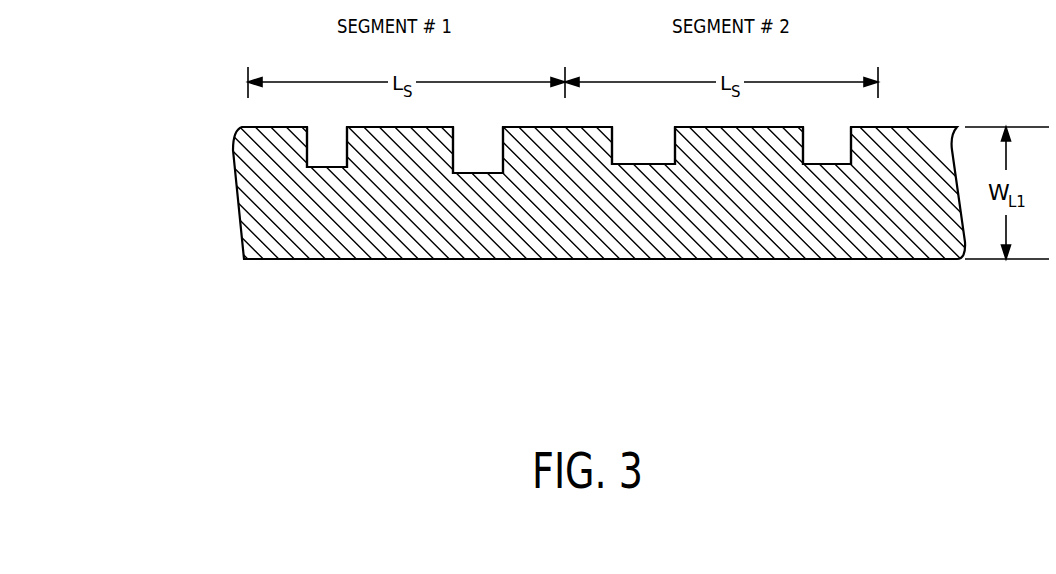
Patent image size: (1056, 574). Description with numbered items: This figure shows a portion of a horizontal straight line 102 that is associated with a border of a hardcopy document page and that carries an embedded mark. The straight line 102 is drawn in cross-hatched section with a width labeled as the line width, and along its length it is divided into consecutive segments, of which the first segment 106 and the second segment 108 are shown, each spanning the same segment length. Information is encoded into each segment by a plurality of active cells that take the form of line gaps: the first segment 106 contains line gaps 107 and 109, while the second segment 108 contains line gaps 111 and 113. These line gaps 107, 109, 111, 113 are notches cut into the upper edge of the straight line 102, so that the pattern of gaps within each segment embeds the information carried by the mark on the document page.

The straight line 102 is at (925, 127).
The segment #1 106 is at (262, 265).
The line gap 107 is at (323, 130).
The segment #2 108 is at (597, 265).
The line gap 109 is at (478, 127).
The line gap 111 is at (638, 127).
The line gap 113 is at (830, 127).